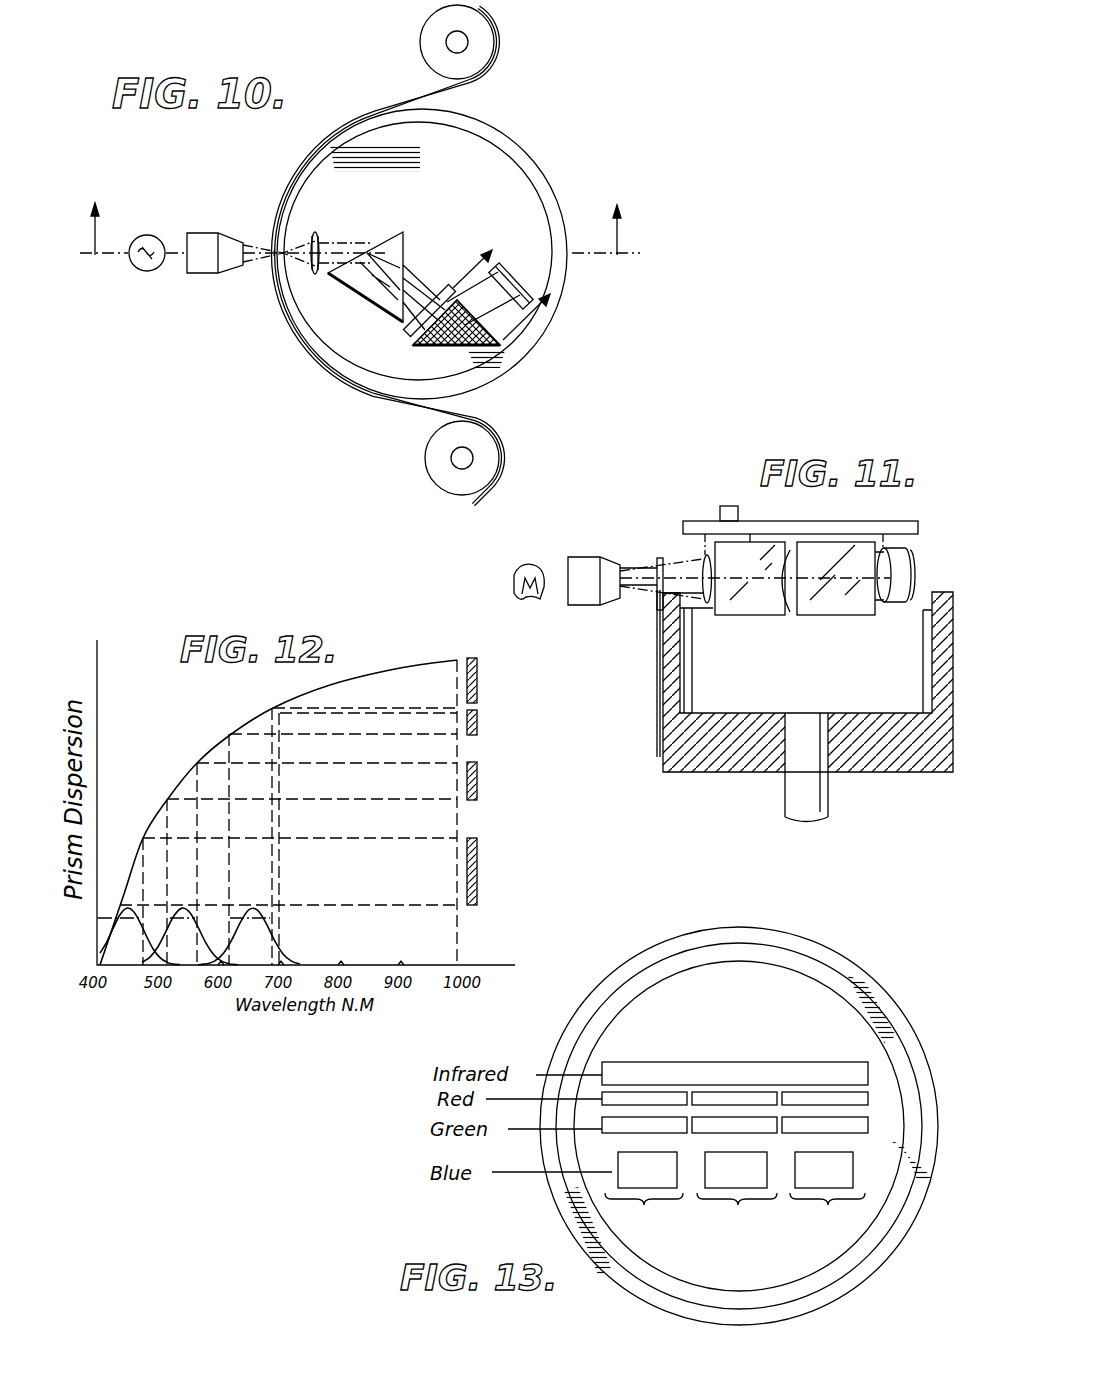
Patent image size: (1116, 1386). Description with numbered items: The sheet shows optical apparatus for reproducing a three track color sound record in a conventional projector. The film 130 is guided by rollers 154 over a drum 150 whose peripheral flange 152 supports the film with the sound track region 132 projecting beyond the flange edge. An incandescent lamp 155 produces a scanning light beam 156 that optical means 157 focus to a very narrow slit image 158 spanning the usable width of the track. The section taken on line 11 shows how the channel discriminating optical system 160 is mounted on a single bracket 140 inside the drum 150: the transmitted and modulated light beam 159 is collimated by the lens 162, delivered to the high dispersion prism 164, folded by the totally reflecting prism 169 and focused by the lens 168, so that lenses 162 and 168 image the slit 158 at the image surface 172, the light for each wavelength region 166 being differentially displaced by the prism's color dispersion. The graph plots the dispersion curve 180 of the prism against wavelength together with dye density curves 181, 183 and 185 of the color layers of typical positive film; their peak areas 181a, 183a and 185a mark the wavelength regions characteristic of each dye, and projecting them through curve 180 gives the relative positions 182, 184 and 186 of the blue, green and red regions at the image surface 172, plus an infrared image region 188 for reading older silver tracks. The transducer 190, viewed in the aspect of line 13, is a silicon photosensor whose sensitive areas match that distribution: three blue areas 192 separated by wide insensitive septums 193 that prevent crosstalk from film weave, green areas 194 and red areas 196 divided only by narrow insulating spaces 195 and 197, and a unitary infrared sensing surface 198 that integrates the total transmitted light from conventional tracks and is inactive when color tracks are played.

In FIG. 10, the section line 11— 11 is at (375, 221).
In FIG. 10, the line 13— 13 is at (522, 288).
In FIG. 10, the film 130 is at (426, 88).
In FIG. 11, the film 130 is at (656, 722).
In FIG. 11, the sound track region 132 is at (661, 572).
In FIG. 11, the bracket 140 is at (904, 516).
In FIG. 10, the drum 150 is at (556, 184).
In FIG. 11, the drum 150 is at (708, 780).
In FIG. 11, the peripheral flange 152 is at (942, 604).
In FIG. 10, the rollers 154 is at (420, 41).
In FIG. 10, the incandescent lamp 155 is at (152, 236).
In FIG. 11, the incandescent lamp 155 is at (546, 564).
In FIG. 10, the scanning light beam 156 is at (257, 263).
In FIG. 11, the scanning light beam 156 is at (640, 572).
In FIG. 10, the optical means 157 is at (210, 236).
In FIG. 11, the optical means 157 is at (602, 558).
In FIG. 10, the slit image 158 is at (284, 250).
In FIG. 10, the transmitted and modulated light beam 159 is at (316, 239).
In FIG. 11, the transmitted and modulated light beam 159 is at (702, 598).
In FIG. 10, the channel discriminating optical system 160 is at (422, 240).
In FIG. 11, the channel discriminating optical system 160 is at (920, 546).
In FIG. 10, the lens 162 is at (344, 240).
In FIG. 11, the lens 162 is at (714, 614).
In FIG. 10, the prism 164 is at (402, 232).
In FIG. 11, the prism 164 is at (766, 610).
In FIG. 10, the dispersed beam 166 is at (416, 285).
In FIG. 10, the lens 168 is at (404, 320).
In FIG. 11, the lens 168 is at (790, 572).
In FIG. 10, the totally reflecting prism 169 is at (430, 347).
In FIG. 11, the totally reflecting prism 169 is at (840, 614).
In FIG. 10, the image surface 172 is at (515, 322).
In FIG. 11, the image surface 172 is at (886, 596).
In FIG. 12, the dispersion curve 180 is at (236, 722).
In FIG. 12, the dye density curve 181 is at (128, 904).
In FIG. 12, the blocked-off peak area 181a is at (127, 919).
In FIG. 12, the relative position of wavelength region 182 is at (467, 862).
In FIG. 12, the dye density curve 183 is at (184, 908).
In FIG. 12, the blocked-off peak area 183a is at (185, 920).
In FIG. 12, the relative position of wavelength region 184 is at (467, 785).
In FIG. 12, the dye density curve 185 is at (258, 906).
In FIG. 12, the blocked-off peak area 185a is at (254, 920).
In FIG. 12, the relative position of wavelength region 186 is at (467, 722).
In FIG. 12, the infrared image region 188 is at (467, 676).
In FIG. 10, the transducer 190 is at (528, 279).
In FIG. 11, the transducer 190 is at (924, 573).
In FIG. 13, the transducer 190 is at (896, 996).
In FIG. 13, the blue light receiving areas 192 is at (862, 1164).
In FIG. 13, the insensitive regions (septums) 193 is at (693, 1174).
In FIG. 13, the photosensitive areas for green 194 is at (880, 1124).
In FIG. 13, the spaces 195 is at (777, 1120).
In FIG. 13, the photosensitive areas for red 196 is at (878, 1096).
In FIG. 13, the spaces 197 is at (706, 1092).
In FIG. 13, the sensing surface 198 is at (860, 1065).